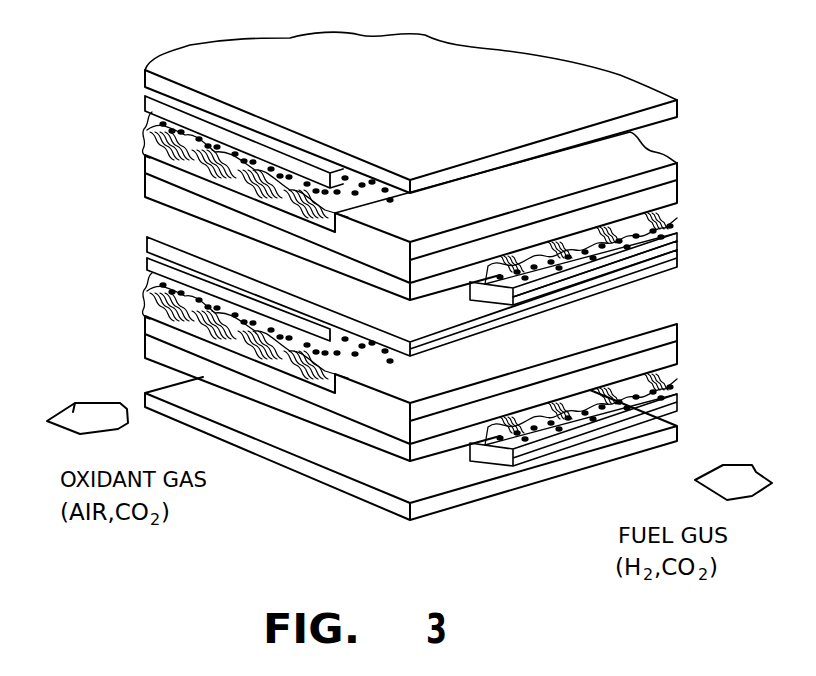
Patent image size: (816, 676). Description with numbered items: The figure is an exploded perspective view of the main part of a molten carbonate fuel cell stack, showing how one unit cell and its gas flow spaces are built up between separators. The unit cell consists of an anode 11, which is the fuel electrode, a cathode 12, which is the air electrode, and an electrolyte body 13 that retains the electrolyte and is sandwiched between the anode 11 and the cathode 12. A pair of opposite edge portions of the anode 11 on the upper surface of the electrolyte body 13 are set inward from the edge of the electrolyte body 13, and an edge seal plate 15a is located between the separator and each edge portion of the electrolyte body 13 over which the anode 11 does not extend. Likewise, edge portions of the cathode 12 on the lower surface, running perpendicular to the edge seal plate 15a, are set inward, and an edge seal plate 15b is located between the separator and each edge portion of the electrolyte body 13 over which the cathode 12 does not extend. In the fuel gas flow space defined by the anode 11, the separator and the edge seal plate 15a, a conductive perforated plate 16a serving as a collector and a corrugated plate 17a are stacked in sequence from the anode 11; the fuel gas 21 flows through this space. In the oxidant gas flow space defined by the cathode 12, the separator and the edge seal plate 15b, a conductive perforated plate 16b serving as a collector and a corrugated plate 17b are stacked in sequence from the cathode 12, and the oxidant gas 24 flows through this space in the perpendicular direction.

The anode 11 is at (668, 262).
The cathode 12 is at (147, 243).
The electrolyte body 13 is at (657, 282).
The edge seal plate 15a is at (428, 284).
The edge seal plate 15b is at (367, 397).
The conductive perforated plate 16a is at (682, 244).
The conductive perforated plate 16b is at (157, 290).
The corrugated plate 17a is at (682, 212).
The corrugated plate 17b is at (158, 318).
The fuel gas 21 is at (715, 468).
The oxidant gas 24 is at (68, 404).